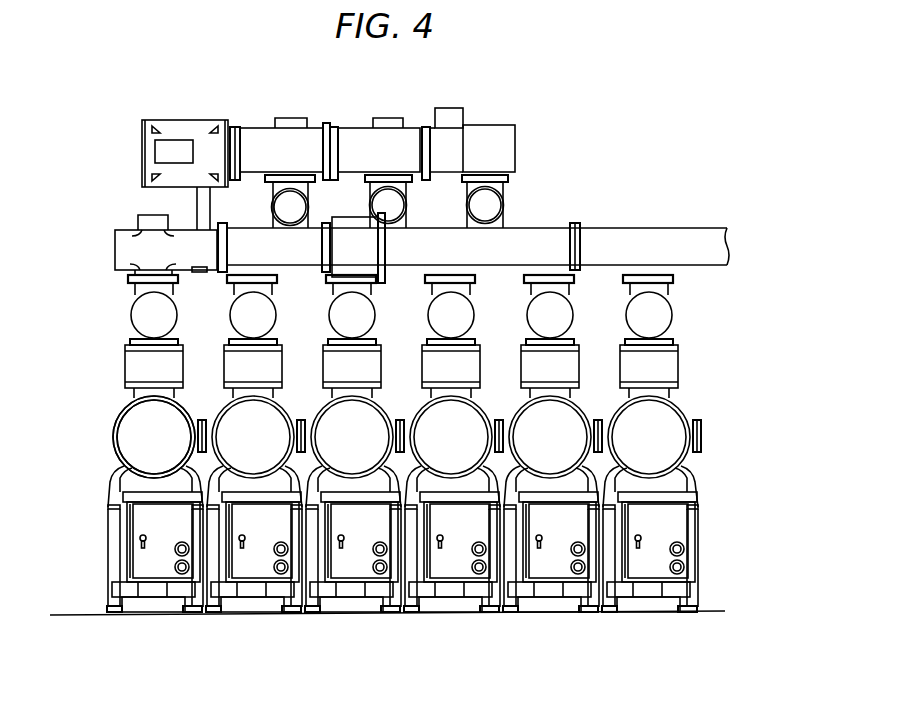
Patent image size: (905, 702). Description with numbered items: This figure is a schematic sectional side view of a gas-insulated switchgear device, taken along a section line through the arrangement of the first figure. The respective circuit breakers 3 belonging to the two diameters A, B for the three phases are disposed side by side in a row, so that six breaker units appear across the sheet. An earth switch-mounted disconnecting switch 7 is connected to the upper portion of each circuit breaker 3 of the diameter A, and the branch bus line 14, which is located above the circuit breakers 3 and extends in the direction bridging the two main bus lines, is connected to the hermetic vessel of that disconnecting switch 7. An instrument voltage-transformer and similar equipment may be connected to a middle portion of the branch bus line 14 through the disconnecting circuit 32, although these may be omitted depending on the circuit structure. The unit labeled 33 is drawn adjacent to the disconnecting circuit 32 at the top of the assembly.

The circuit breaker 3 is at (117, 420).
The earth switch-mounted disconnecting switch 7 is at (113, 246).
The branch bus line 14 is at (620, 235).
The disconnecting circuit 32 is at (292, 140).
The control box 33 is at (192, 128).
The diameter A is at (165, 603).
The diameter B is at (465, 603).